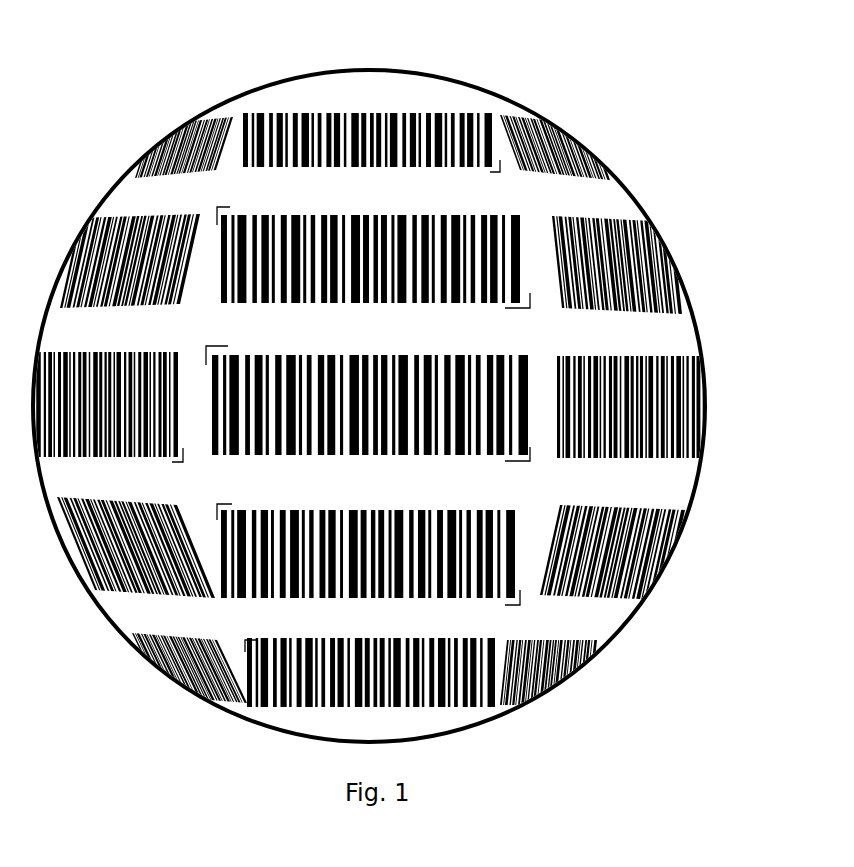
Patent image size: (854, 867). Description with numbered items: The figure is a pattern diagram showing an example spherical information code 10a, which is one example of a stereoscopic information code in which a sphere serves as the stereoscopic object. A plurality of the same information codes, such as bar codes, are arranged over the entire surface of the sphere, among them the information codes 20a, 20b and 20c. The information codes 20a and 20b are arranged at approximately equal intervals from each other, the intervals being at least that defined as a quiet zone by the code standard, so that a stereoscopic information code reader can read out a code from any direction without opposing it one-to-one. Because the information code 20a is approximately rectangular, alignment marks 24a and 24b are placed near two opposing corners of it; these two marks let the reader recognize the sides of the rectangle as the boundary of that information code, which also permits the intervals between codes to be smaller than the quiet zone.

The spherical information code 10a is at (427, 95).
The information code 20a is at (318, 357).
The information code 20b is at (600, 360).
The information code 20c is at (583, 510).
The alignment mark 24a is at (213, 347).
The alignment mark 24b is at (522, 466).